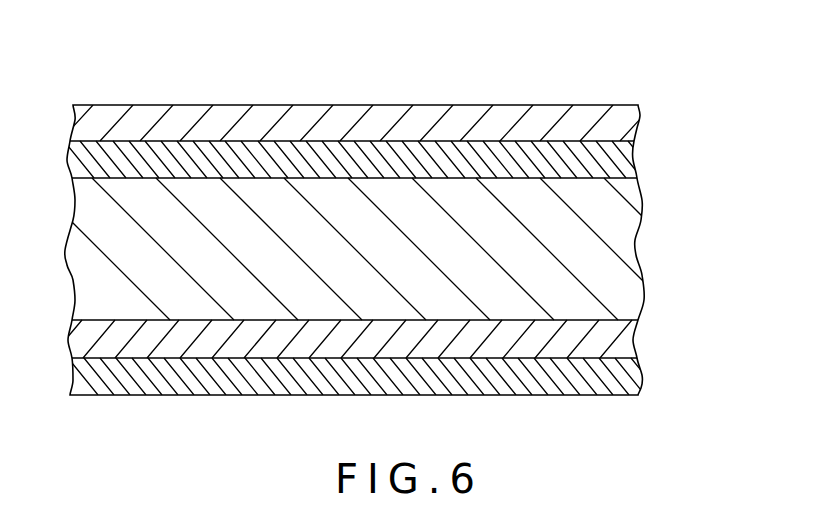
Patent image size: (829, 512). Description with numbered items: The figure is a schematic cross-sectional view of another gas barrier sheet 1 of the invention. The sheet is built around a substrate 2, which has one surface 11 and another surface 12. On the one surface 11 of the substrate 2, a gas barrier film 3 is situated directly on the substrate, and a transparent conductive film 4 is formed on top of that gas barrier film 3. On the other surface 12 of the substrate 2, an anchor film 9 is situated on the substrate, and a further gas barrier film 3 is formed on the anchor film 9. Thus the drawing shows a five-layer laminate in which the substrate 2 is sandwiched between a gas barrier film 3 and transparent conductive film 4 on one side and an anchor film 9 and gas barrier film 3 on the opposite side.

The gas barrier sheet 1 is at (639, 94).
The substrate 2 is at (622, 242).
The gas barrier film 3 is at (627, 156).
The transparent conductive film 4 is at (637, 123).
The anchor film 9 is at (634, 340).
The one surface 11 is at (454, 177).
The other surface 12 is at (570, 322).